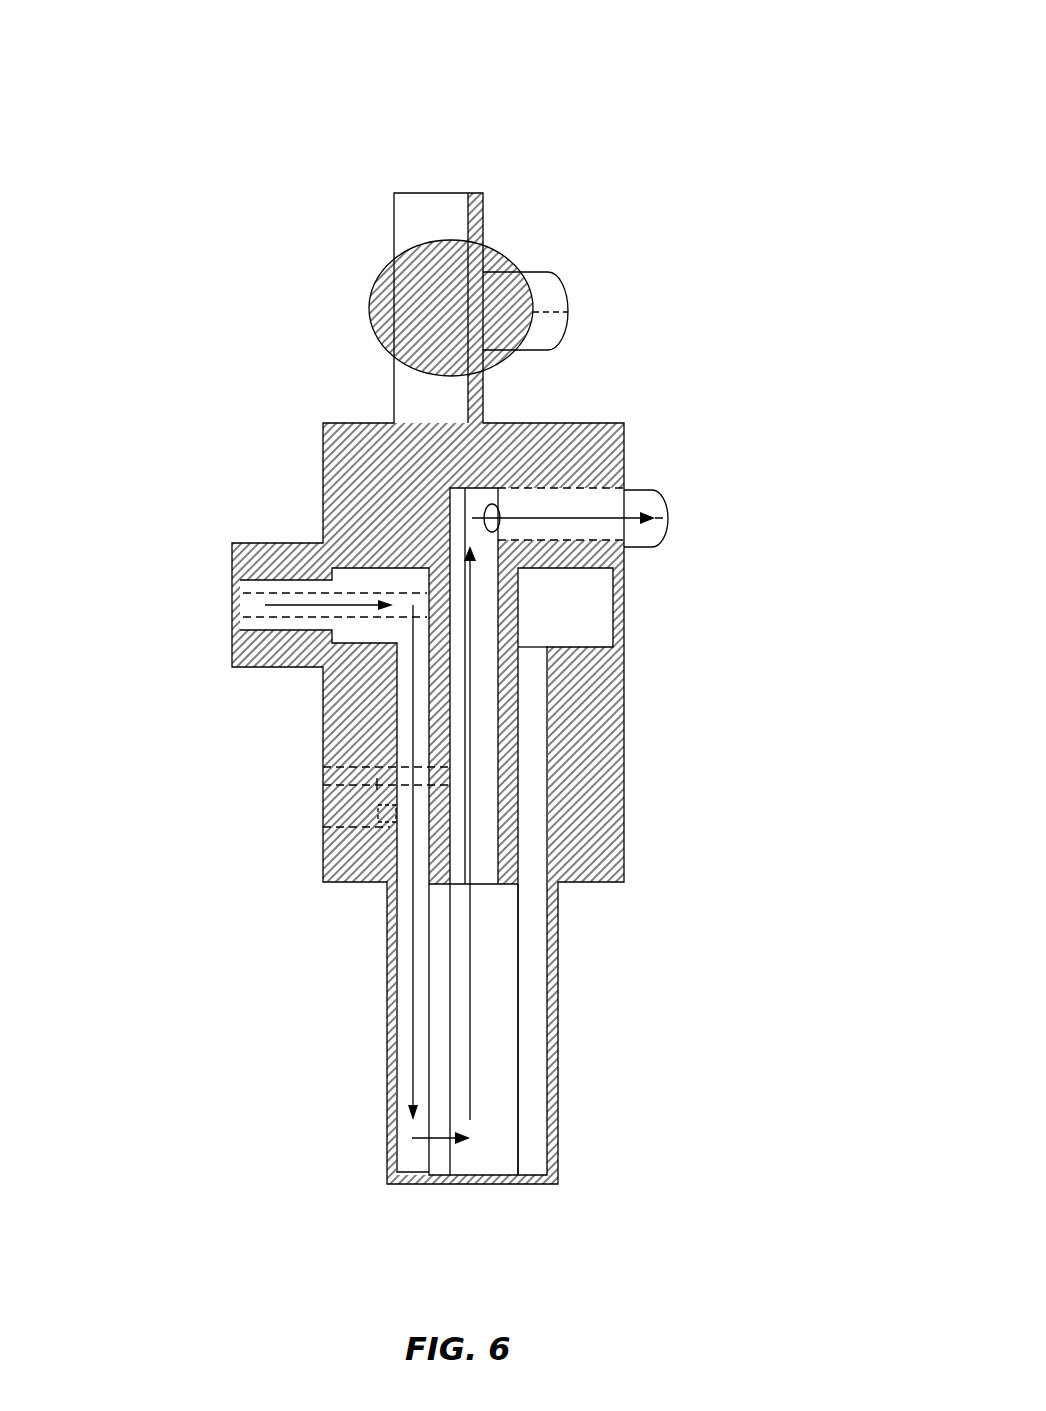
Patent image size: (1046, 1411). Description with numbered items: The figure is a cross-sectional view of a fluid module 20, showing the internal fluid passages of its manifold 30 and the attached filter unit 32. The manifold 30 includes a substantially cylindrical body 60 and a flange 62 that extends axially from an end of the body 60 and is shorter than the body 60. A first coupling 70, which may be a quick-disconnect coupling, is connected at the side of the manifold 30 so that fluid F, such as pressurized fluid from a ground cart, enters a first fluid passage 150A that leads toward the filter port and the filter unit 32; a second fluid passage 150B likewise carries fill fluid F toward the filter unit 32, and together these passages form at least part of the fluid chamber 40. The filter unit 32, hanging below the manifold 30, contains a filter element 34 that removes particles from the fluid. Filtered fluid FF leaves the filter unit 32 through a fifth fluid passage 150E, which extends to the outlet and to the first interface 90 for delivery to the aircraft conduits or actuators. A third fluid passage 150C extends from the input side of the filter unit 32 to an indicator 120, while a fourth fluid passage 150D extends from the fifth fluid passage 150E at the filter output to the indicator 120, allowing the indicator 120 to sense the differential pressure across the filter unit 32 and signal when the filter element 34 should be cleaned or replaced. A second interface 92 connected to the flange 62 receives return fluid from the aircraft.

The fluid module 20 is at (461, 605).
The manifold 30 is at (419, 684).
The filter unit 32 is at (385, 1057).
The filter element 34 is at (520, 1100).
The fluid chamber 40 is at (427, 703).
The body 60 is at (630, 817).
The flange 62 is at (408, 223).
The first coupling 70 is at (232, 597).
The first interface 90 is at (672, 520).
The second interface 92 is at (572, 310).
The indicator 120 is at (318, 795).
The first fluid passage 150A is at (266, 578).
The second fluid passage 150B is at (270, 630).
The third fluid passage 150C is at (385, 827).
The fourth fluid passage 150D is at (385, 758).
The fifth fluid passage 150E is at (500, 745).
The fluid F is at (318, 600).
The filtered fluid FF is at (600, 505).